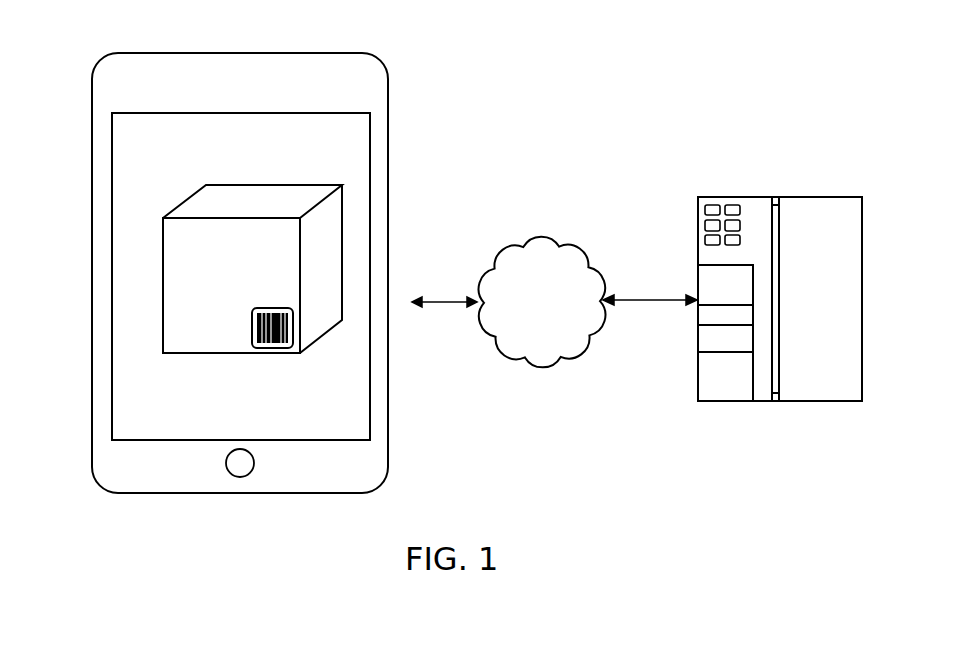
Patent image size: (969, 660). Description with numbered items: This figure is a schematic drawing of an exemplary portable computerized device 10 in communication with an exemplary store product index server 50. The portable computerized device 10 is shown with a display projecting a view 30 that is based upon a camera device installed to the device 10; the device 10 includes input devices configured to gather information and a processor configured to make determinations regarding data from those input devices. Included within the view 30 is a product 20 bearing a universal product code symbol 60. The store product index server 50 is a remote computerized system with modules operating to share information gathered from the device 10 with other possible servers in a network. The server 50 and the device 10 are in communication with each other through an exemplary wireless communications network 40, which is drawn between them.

The portable computerized device 10 is at (246, 53).
The product 20 is at (163, 239).
The view 30 is at (360, 397).
The wireless communications network 40 is at (539, 265).
The store product index server 50 is at (760, 213).
The universal product code (UPC) symbol 60 is at (252, 314).